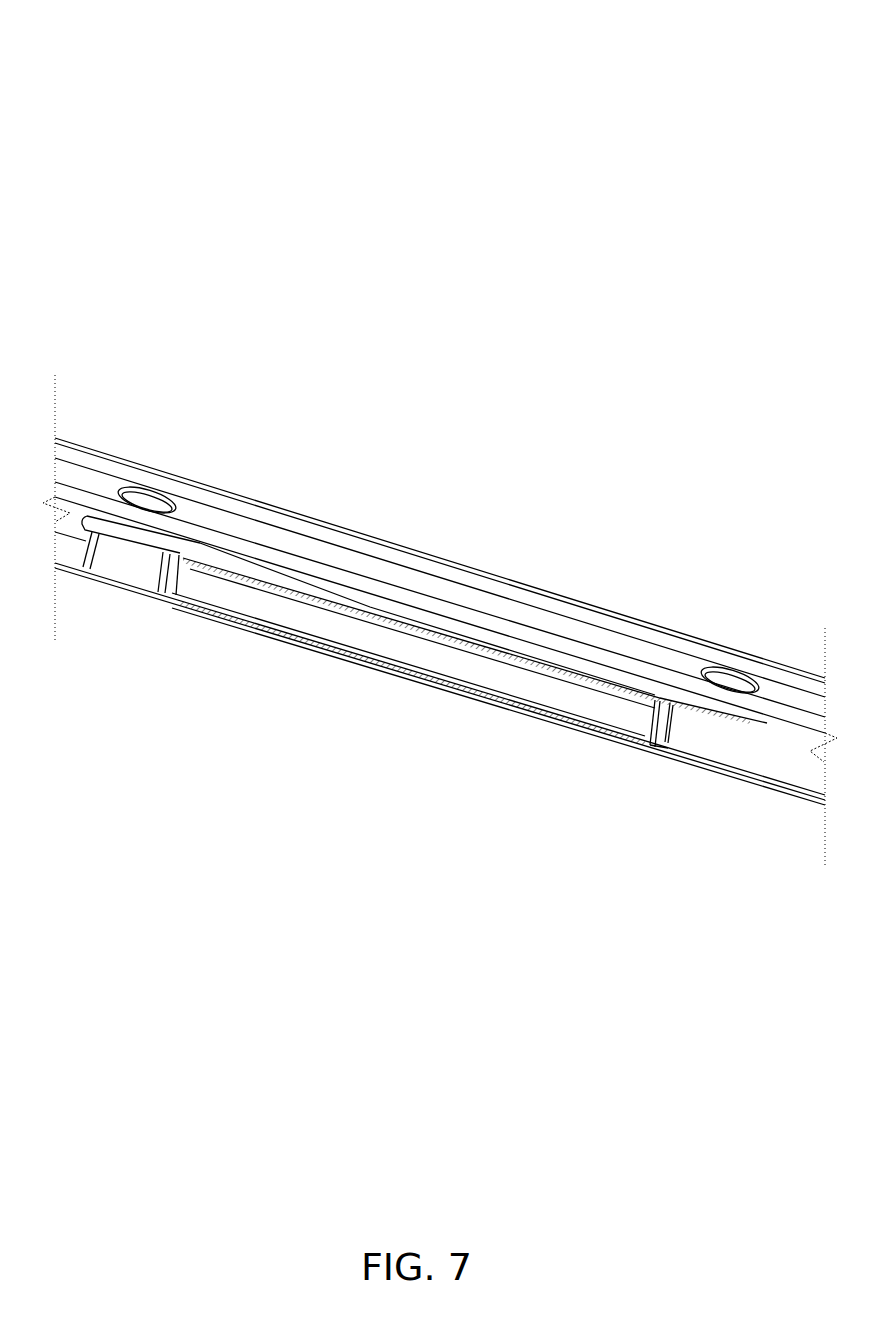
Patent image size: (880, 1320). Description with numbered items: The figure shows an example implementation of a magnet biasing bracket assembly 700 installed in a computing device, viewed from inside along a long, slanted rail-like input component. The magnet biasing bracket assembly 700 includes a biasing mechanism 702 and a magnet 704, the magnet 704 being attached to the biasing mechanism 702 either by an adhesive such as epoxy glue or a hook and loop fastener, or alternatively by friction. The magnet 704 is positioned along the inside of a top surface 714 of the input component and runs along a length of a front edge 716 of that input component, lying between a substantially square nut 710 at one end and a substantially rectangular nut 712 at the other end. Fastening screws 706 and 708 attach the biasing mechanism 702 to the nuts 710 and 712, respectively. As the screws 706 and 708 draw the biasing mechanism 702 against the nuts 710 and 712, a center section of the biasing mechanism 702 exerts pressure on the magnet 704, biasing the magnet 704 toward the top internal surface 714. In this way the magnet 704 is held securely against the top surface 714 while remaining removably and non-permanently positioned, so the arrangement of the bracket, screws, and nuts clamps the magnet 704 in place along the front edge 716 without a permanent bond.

The magnet biasing bracket assembly 700 is at (149, 66).
The biasing mechanism 702 is at (546, 666).
The magnet 704 is at (405, 648).
The fastening screw 706 is at (160, 498).
The fastening screw 708 is at (729, 681).
The substantially square nut 710 is at (138, 568).
The substantially rectangular nut 712 is at (747, 757).
The top surface 714 is at (518, 710).
The front edge 716 is at (300, 514).